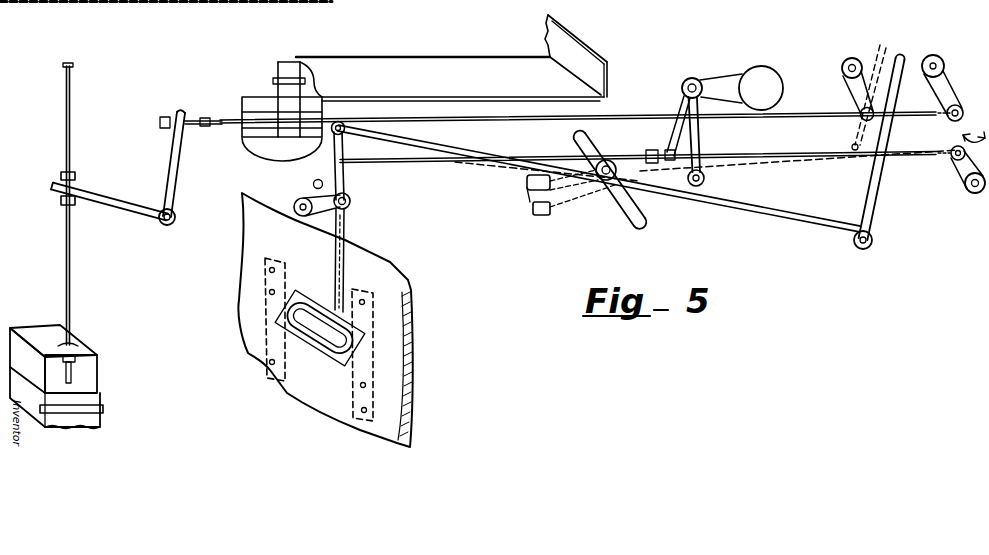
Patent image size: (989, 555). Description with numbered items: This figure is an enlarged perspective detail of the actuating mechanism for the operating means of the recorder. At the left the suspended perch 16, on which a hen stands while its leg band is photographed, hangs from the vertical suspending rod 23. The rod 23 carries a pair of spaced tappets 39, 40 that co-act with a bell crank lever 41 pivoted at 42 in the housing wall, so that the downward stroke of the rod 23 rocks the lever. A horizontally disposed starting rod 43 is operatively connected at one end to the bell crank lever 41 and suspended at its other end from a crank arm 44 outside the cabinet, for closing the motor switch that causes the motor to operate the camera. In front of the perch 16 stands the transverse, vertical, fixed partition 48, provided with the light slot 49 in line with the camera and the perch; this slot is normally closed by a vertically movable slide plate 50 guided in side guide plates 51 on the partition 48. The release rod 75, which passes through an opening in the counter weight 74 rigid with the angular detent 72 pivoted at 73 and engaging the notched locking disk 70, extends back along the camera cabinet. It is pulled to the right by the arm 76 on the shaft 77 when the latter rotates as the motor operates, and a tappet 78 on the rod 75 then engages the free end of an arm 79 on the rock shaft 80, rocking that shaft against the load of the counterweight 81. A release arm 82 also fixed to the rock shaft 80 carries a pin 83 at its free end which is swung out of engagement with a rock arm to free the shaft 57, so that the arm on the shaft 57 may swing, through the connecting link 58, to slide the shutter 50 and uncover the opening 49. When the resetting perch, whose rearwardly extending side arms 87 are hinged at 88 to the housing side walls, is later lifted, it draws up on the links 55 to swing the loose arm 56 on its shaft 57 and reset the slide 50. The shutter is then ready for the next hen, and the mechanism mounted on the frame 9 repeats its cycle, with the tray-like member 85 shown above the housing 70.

The frame 9 is at (143, 4).
The hinge 88 is at (214, 4).
The side arms 87 is at (260, 4).
The suspended perch 16 is at (53, 343).
The vertical suspending rod 23 is at (72, 252).
The tappet 39 is at (61, 176).
The tappet 40 is at (61, 200).
The bell crank lever 41 is at (105, 200).
The pivot 42 is at (165, 226).
The starting rod 43 is at (196, 129).
The crank arm 44 is at (946, 82).
The partition 48 is at (364, 273).
The light slot 49 is at (331, 333).
The slide plate 50 is at (280, 308).
The side guide plates 51 is at (290, 343).
The links 55 is at (876, 192).
The loose arm 56 is at (744, 212).
The shaft 57 is at (505, 178).
The connecting link 58 is at (350, 209).
The locking disk 70 is at (283, 152).
The angular detent 72 is at (345, 181).
The pivot 73 is at (351, 198).
The counter weight 74 is at (299, 199).
The release rod 75 is at (440, 163).
The arm 76 is at (955, 143).
The shaft 77 is at (971, 193).
The tappet 78 is at (650, 152).
The arm 79 is at (674, 149).
The rock shaft 80 is at (690, 78).
The counterweight 81 is at (770, 71).
The release arm 82 is at (697, 190).
The pin 83 is at (706, 178).
The tray 85 is at (660, 234).